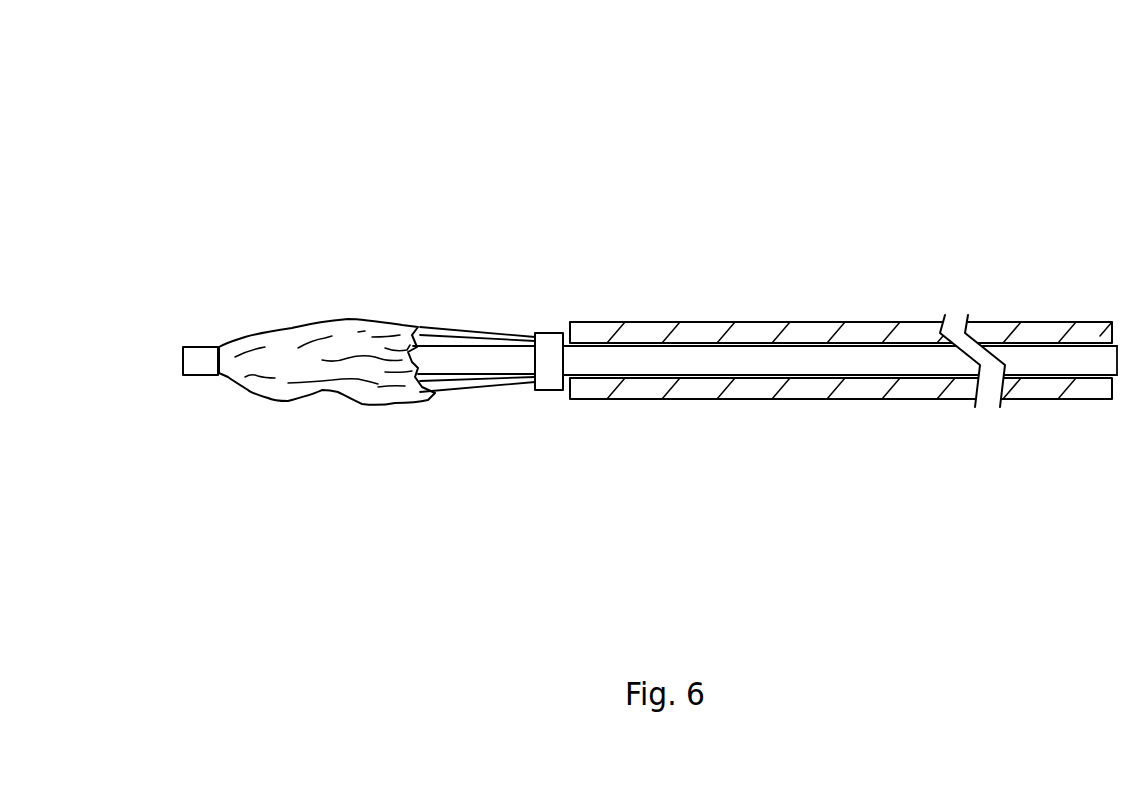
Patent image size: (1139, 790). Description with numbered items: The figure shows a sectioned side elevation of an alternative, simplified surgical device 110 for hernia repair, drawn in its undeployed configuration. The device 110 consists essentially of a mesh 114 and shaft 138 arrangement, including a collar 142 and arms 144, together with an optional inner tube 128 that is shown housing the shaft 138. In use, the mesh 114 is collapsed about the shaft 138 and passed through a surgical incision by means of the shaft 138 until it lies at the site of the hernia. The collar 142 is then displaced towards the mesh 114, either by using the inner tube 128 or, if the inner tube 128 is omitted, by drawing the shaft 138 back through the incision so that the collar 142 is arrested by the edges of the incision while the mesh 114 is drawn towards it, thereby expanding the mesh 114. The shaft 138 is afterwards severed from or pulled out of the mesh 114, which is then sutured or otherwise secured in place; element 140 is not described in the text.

The surgical device 110 is at (529, 140).
The mesh 114 is at (323, 345).
The inner tube 128 is at (767, 332).
The shaft 138 is at (450, 367).
The distal tip 140 is at (195, 355).
The collar 142 is at (552, 340).
The arms 144 is at (474, 332).